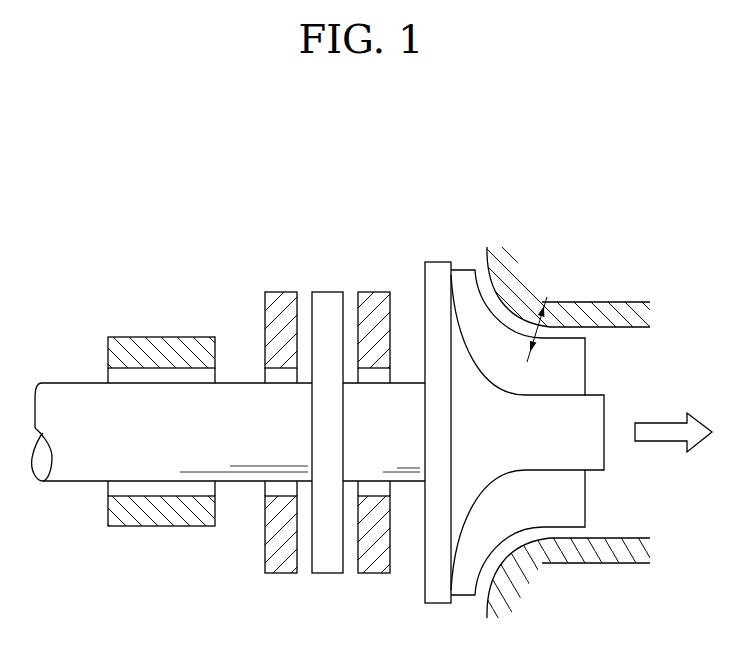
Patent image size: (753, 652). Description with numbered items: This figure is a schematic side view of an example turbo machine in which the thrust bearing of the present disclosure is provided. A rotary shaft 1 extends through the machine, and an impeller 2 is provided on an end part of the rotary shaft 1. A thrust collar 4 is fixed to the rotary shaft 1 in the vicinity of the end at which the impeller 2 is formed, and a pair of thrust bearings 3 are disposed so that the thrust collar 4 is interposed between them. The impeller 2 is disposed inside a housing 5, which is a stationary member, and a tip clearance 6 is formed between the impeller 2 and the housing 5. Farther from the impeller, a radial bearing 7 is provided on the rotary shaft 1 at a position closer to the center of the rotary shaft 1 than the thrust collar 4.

The rotary shaft 1 is at (68, 392).
The impeller 2 is at (482, 327).
The thrust bearing 3 is at (280, 304).
The thrust collar 4 is at (328, 304).
The housing 5 is at (515, 295).
The tip clearance 6 is at (556, 331).
The radial bearing 7 is at (161, 354).